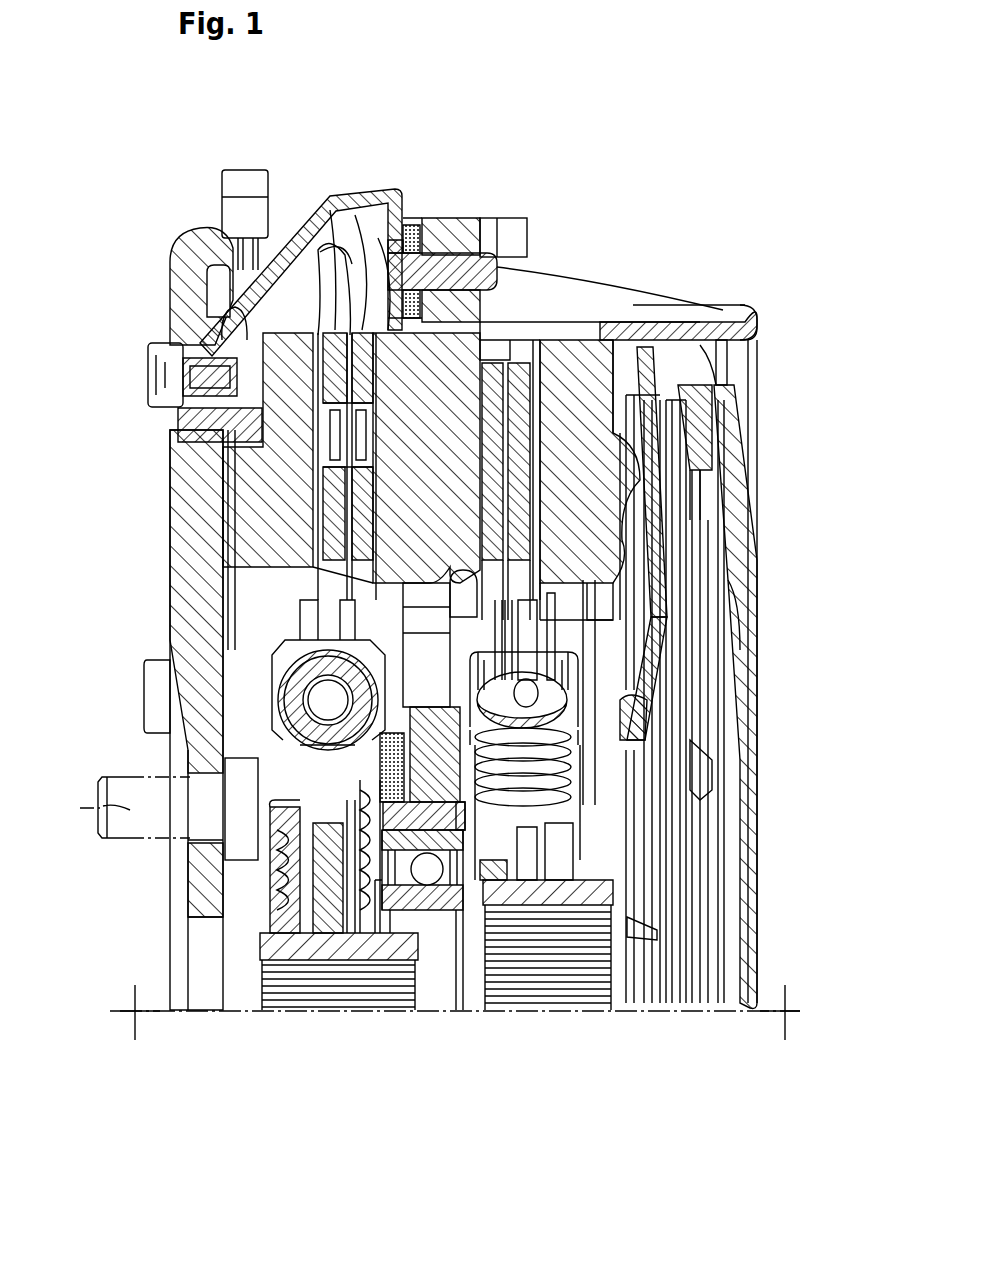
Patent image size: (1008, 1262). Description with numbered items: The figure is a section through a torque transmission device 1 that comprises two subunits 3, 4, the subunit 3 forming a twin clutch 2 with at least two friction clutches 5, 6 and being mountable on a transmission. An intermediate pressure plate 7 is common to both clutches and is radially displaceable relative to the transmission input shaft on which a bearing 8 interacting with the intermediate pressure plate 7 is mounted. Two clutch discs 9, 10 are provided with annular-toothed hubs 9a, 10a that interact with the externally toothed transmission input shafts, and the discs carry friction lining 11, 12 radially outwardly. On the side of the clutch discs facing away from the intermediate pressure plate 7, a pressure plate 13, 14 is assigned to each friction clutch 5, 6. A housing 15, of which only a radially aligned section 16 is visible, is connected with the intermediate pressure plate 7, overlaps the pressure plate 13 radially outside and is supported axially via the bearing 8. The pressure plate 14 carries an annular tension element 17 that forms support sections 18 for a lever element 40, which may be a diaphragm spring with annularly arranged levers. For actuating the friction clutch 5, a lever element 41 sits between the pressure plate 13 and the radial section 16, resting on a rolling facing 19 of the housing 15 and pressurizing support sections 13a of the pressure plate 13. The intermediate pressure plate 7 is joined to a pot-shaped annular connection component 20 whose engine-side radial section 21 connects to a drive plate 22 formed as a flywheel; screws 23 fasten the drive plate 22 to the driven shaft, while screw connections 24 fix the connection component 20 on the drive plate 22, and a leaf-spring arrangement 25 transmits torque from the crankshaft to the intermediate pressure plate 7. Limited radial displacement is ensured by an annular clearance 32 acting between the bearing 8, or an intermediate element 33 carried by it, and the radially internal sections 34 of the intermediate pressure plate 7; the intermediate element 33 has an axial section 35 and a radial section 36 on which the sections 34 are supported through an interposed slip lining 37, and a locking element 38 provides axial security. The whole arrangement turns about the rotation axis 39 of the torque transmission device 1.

The torque transmission device 1 is at (492, 118).
The twin clutch 2 is at (517, 203).
The subunit 3 is at (585, 192).
The subunit 4 is at (206, 218).
The friction clutch 5 is at (613, 323).
The friction clutch 6 is at (318, 318).
The intermediate pressure plate 7 is at (455, 300).
The bearing 8 is at (422, 873).
The clutch disc 9 is at (503, 883).
The annular-toothed hub 9a is at (567, 897).
The clutch disc 10 is at (290, 937).
The annular-toothed hub 10a is at (330, 957).
The friction lining 11 is at (520, 350).
The friction lining 12 is at (365, 348).
The pressure plate 13 is at (585, 365).
The support sections 13a is at (632, 492).
The pressure plate 14 is at (262, 508).
The housing 15 is at (695, 400).
The radially aligned section 16 is at (672, 340).
The annular tension element 17 is at (662, 315).
The support sections 18 is at (757, 325).
The rolling facing 19 is at (695, 352).
The annular connection component 20 is at (238, 290).
The radial section 21 is at (222, 425).
The drive plate 22 is at (185, 540).
The screws 23 is at (83, 810).
The screw connections 24 is at (175, 362).
The leaf-spring arrangement 25 is at (412, 238).
The clearance 32 is at (458, 830).
The intermediate element 33 is at (560, 835).
The radially internal sections 34 is at (490, 758).
The axial section 35 is at (413, 830).
The radial section 36 is at (470, 812).
The slip lining 37 is at (440, 770).
The locking element 38 is at (520, 790).
The rotation axis 39 is at (205, 1017).
The lever element 40 is at (727, 455).
The lever element 41 is at (672, 570).